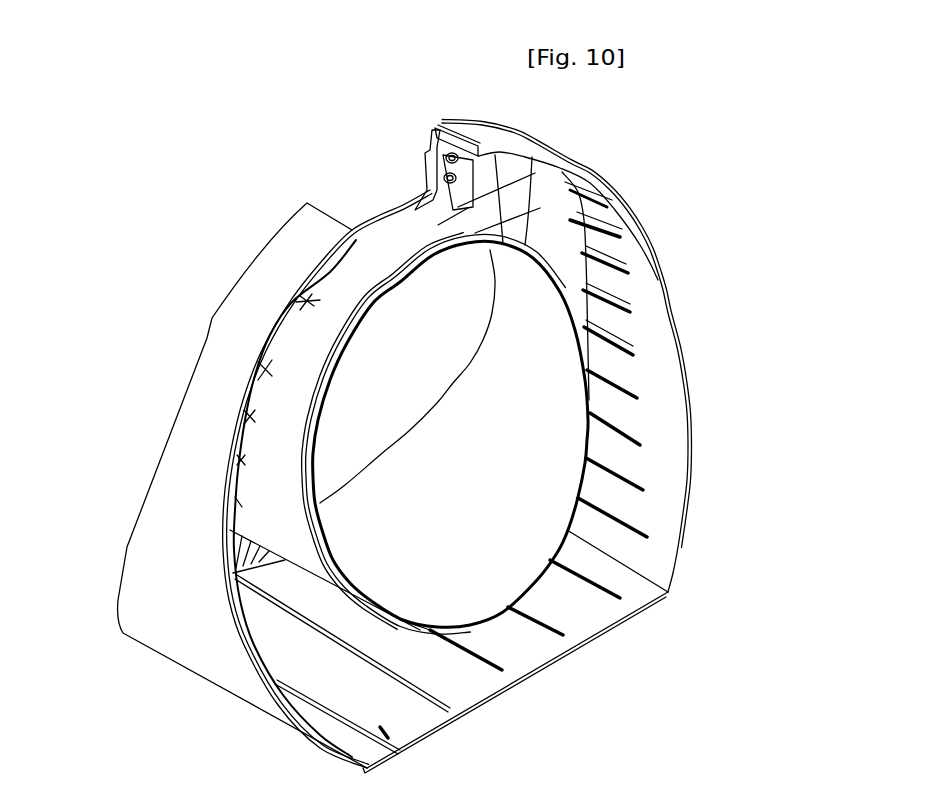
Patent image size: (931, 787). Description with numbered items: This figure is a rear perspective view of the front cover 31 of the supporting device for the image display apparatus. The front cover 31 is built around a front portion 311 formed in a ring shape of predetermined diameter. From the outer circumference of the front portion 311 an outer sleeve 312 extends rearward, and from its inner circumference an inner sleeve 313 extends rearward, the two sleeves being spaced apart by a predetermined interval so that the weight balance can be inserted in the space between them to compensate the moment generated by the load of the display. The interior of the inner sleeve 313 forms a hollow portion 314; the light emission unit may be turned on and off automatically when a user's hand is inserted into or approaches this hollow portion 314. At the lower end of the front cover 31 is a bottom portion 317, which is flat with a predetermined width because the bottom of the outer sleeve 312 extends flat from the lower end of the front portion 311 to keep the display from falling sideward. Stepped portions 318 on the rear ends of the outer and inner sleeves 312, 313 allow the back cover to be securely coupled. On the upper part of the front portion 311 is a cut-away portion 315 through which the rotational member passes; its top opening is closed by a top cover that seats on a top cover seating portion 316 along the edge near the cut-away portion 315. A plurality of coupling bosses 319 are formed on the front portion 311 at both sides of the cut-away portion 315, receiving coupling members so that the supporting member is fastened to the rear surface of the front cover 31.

The front cover 31 is at (717, 160).
The front portion 311 is at (527, 195).
The outer sleeve 312 is at (620, 277).
The inner sleeve 313 is at (453, 612).
The hollow portion 314 is at (462, 538).
The cut-away portion 315 is at (382, 200).
The top cover seating portion 316 is at (426, 138).
The bottom portion 317 is at (403, 725).
The stepped portions 318 is at (313, 437).
The coupling bosses 319 is at (437, 129).